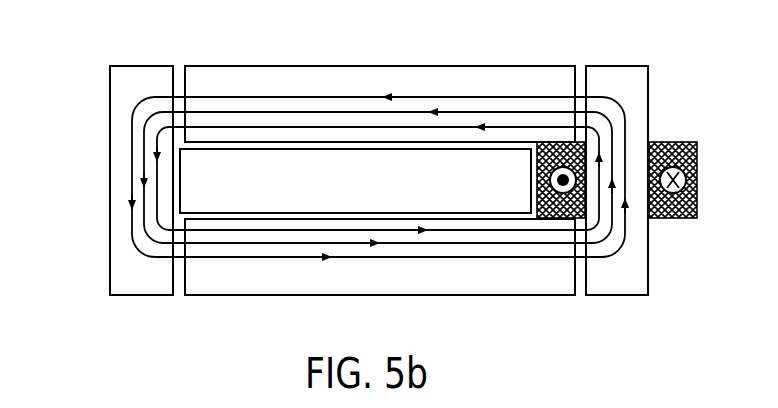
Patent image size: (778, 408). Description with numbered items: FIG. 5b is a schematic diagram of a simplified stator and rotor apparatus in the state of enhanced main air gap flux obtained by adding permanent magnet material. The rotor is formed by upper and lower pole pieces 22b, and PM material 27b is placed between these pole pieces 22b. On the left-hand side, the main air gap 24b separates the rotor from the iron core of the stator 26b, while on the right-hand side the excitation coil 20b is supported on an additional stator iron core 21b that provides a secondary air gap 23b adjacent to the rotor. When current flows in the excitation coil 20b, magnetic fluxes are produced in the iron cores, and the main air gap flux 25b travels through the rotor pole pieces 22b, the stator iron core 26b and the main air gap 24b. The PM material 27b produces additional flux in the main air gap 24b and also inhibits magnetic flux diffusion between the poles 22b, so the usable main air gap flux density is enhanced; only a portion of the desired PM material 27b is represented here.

The excitation coil 20b is at (687, 142).
The additional stator iron core 21b is at (623, 65).
The pole pieces of the rotor 22b is at (320, 218).
The secondary air gap 23b is at (580, 83).
The main air gap 24b is at (174, 233).
The main air gap flux 25b is at (195, 260).
The stator iron core 26b is at (109, 238).
The PM material 27b is at (255, 197).